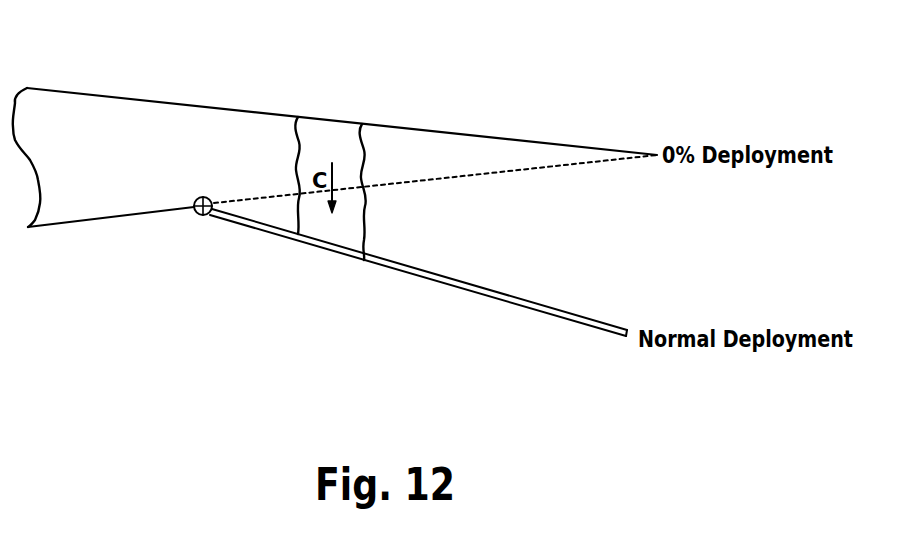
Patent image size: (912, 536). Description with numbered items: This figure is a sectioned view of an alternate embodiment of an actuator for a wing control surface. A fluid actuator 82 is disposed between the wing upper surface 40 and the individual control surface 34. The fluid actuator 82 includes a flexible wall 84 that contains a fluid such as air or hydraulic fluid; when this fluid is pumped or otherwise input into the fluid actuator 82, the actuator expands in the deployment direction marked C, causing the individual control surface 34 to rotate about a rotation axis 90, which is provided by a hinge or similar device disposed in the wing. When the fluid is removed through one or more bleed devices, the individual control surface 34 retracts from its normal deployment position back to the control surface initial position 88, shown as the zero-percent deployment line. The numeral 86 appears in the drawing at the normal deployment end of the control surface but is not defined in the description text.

The wing upper surface 40 is at (200, 107).
The fluid actuator 82 is at (322, 135).
The flexible wall 84 is at (367, 152).
The control surface initial position 88 is at (535, 170).
The rotation axis 90 is at (198, 217).
The individual control surface 34 is at (437, 282).
The normal deployment position end 86 is at (625, 333).